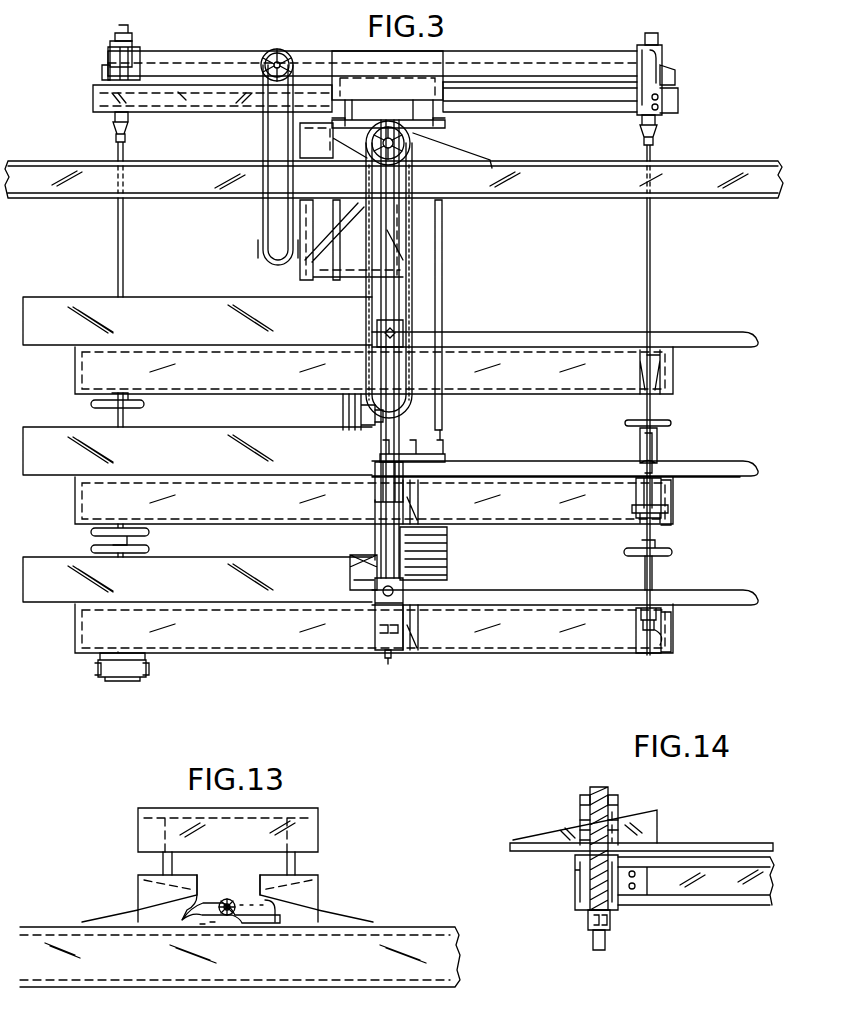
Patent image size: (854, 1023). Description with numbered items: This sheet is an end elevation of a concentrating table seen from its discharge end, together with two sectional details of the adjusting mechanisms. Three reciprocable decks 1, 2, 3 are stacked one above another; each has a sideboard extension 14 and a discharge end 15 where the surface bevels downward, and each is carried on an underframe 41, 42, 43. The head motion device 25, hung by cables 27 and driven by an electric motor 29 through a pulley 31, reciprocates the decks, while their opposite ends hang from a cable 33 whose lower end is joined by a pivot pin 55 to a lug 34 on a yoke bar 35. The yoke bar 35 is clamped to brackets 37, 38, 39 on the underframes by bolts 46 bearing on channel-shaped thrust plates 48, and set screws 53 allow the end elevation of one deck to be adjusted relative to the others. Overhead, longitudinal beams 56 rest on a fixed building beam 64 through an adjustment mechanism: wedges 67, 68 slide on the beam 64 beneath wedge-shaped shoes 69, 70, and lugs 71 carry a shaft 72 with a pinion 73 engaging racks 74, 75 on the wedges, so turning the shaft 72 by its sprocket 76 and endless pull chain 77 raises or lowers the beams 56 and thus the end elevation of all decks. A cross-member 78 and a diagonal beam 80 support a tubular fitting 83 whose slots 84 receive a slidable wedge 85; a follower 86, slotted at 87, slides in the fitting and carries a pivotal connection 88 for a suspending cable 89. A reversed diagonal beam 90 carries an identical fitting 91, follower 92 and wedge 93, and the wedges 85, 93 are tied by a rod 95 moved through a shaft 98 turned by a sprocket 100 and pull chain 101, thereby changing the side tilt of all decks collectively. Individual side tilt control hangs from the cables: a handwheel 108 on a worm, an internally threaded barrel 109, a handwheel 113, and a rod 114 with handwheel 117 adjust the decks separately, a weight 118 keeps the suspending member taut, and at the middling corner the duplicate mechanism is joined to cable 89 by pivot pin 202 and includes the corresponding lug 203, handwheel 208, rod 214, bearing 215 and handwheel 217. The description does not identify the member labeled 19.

In FIG. 3, the deck 1 is at (390, 352).
In FIG. 3, the deck 2 is at (390, 485).
In FIG. 3, the deck 3 is at (390, 612).
In FIG. 3, the sideboard extension 14 is at (197, 321).
In FIG. 3, the discharge end 15 is at (542, 338).
In FIG. 3, the top rail 19 is at (533, 54).
In FIG. 3, the head motion device 25 is at (448, 550).
In FIG. 3, the cables 27 is at (472, 280).
In FIG. 3, the electric motor 29 is at (352, 411).
In FIG. 3, the pulley 31 is at (338, 425).
In FIG. 3, the cable 33 is at (386, 422).
In FIG. 3, the lug 34 is at (375, 506).
In FIG. 3, the yoke bar 35 is at (360, 567).
In FIG. 3, the bracket 37 is at (428, 366).
In FIG. 3, the bracket 38 is at (355, 415).
In FIG. 3, the bracket 39 is at (418, 625).
In FIG. 3, the underframe 41 is at (544, 383).
In FIG. 3, the underframe 42 is at (539, 516).
In FIG. 3, the underframe 43 is at (552, 643).
In FIG. 3, the bolt 46 is at (383, 594).
In FIG. 3, the thrust plate 48 is at (375, 332).
In FIG. 3, the set screw 53 is at (393, 657).
In FIG. 3, the pivot pin 55 is at (375, 461).
In FIG. 3, the overhead beams 56 is at (443, 103).
In FIG. 13, the overhead beams 56 is at (295, 858).
In FIG. 3, the fixed beam 64 is at (554, 180).
In FIG. 13, the fixed beam 64 is at (264, 971).
In FIG. 13, the wedge 67 is at (150, 924).
In FIG. 13, the wedge 68 is at (313, 924).
In FIG. 13, the wedge-shaped shoe 69 is at (138, 890).
In FIG. 13, the wedge-shaped shoe 70 is at (318, 890).
In FIG. 13, the lugs 71 is at (268, 925).
In FIG. 3, the shaft 72 is at (382, 145).
In FIG. 13, the shaft 72 is at (232, 895).
In FIG. 13, the pinion 73 is at (202, 908).
In FIG. 13, the rack 74 is at (223, 925).
In FIG. 13, the rack 75 is at (238, 878).
In FIG. 3, the sprocket 76 is at (386, 108).
In FIG. 3, the endless pull chain 77 is at (415, 237).
In FIG. 3, the cross-member 78 is at (220, 88).
In FIG. 3, the diagonal beam 80 is at (564, 102).
In FIG. 14, the diagonal beam 80 is at (706, 893).
In FIG. 3, the tubular fitting 83 is at (662, 52).
In FIG. 14, the tubular fitting 83 is at (570, 863).
In FIG. 14, the slots 84 is at (618, 807).
In FIG. 3, the slidable wedge 85 is at (675, 75).
In FIG. 14, the slidable wedge 85 is at (653, 832).
In FIG. 3, the follower 86 is at (658, 34).
In FIG. 14, the follower 86 is at (598, 787).
In FIG. 14, the slot 87 is at (583, 826).
In FIG. 14, the pivotal connection 88 is at (588, 922).
In FIG. 3, the suspending member 89 is at (650, 260).
In FIG. 14, the suspending member 89 is at (605, 947).
In FIG. 3, the diagonal beam 90 is at (180, 90).
In FIG. 3, the fitting 91 is at (130, 44).
In FIG. 3, the follower 92 is at (117, 36).
In FIG. 3, the wedge 93 is at (102, 72).
In FIG. 3, the rod 95 is at (572, 74).
In FIG. 14, the rod 95 is at (714, 848).
In FIG. 3, the shaft 98 is at (273, 55).
In FIG. 3, the sprocket 100 is at (284, 55).
In FIG. 3, the endless pull chain 101 is at (264, 231).
In FIG. 3, the handwheel 108 is at (148, 534).
In FIG. 3, the internally threaded barrel 109 is at (134, 410).
In FIG. 3, the handwheel 113 is at (94, 404).
In FIG. 3, the rod 114 is at (122, 557).
In FIG. 3, the handwheel 117 is at (95, 549).
In FIG. 3, the weight 118 is at (148, 667).
In FIG. 3, the pivot pin 202 is at (656, 440).
In FIG. 3, the lug 203 is at (668, 492).
In FIG. 3, the handwheel 208 is at (672, 514).
In FIG. 3, the rod 214 is at (647, 571).
In FIG. 3, the bearing 215 is at (670, 633).
In FIG. 3, the handwheel 217 is at (673, 551).